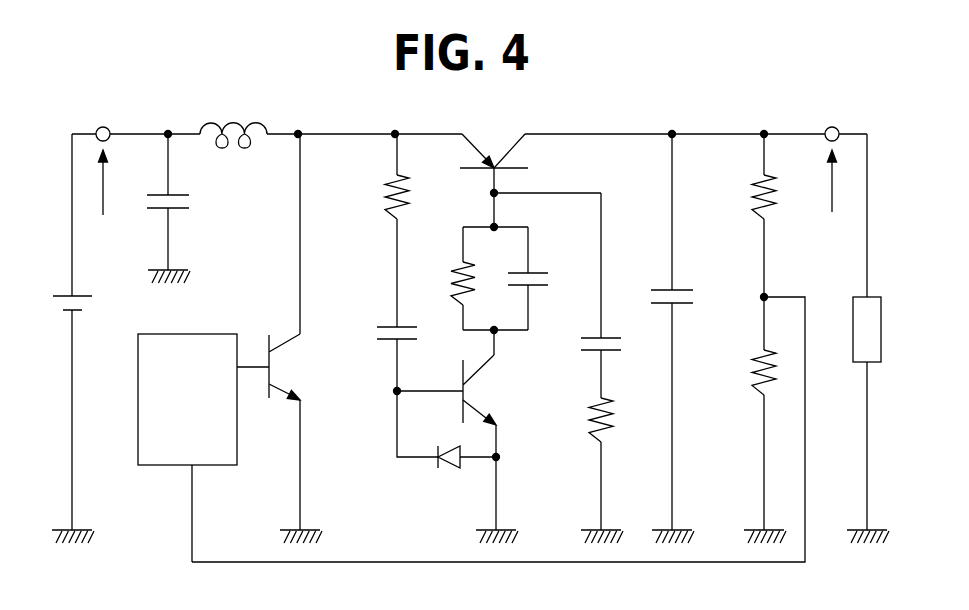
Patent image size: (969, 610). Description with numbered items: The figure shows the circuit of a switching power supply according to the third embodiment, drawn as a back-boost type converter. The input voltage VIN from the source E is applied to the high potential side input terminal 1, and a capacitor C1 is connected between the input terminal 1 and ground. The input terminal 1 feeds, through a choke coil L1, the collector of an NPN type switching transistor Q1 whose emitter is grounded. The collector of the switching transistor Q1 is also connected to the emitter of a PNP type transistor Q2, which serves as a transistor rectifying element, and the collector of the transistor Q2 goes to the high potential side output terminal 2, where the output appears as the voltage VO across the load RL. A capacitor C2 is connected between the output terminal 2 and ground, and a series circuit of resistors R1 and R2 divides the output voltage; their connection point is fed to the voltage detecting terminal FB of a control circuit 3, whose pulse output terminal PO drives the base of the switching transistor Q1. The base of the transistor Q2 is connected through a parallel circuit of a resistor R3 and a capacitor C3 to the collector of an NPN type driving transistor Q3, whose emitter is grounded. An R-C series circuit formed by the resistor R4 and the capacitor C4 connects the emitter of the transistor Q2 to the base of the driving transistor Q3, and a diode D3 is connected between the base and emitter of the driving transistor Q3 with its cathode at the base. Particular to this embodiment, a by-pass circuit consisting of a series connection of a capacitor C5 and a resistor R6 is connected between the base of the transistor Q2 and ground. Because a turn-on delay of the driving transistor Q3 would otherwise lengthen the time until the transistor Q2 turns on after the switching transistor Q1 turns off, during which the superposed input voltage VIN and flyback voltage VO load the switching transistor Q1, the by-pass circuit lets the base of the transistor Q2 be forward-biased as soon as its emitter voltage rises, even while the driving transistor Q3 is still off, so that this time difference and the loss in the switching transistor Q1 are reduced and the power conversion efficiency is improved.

The input terminal 1 is at (103, 127).
The output terminal 2 is at (832, 127).
The control circuit 3 is at (215, 334).
The DC power source E is at (80, 338).
The input voltage VIN is at (104, 200).
The flyback voltage VO is at (826, 203).
The choke coil L1 is at (233, 119).
The capacitor C1 is at (189, 208).
The switching transistor Q1 is at (309, 338).
The resistor R4 is at (374, 197).
The capacitor C4 is at (381, 327).
The transistor Q2 is at (518, 182).
The resistor R3 is at (440, 278).
The capacitor C3 is at (541, 278).
The driving transistor Q3 is at (472, 449).
The diode D3 is at (446, 453).
The capacitor C5 is at (614, 295).
The resistor R6 is at (619, 470).
The capacitor C2 is at (658, 338).
The resistor R1 is at (740, 217).
The resistor R2 is at (747, 420).
The load resistor RL is at (848, 326).